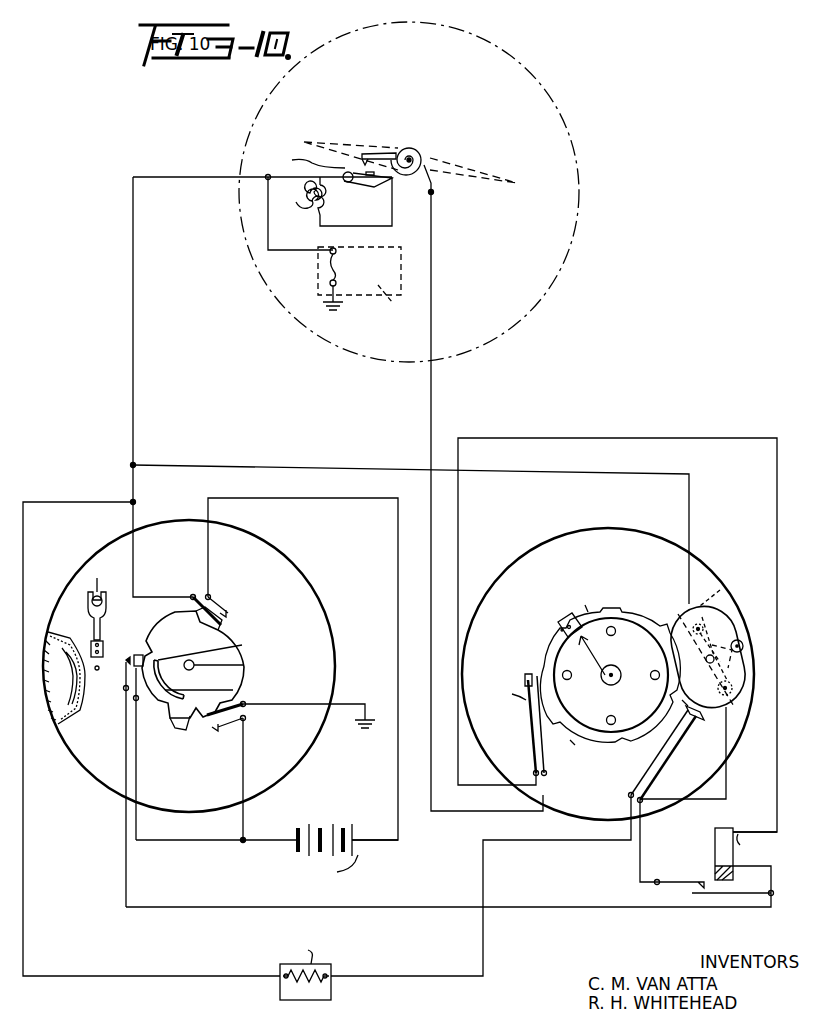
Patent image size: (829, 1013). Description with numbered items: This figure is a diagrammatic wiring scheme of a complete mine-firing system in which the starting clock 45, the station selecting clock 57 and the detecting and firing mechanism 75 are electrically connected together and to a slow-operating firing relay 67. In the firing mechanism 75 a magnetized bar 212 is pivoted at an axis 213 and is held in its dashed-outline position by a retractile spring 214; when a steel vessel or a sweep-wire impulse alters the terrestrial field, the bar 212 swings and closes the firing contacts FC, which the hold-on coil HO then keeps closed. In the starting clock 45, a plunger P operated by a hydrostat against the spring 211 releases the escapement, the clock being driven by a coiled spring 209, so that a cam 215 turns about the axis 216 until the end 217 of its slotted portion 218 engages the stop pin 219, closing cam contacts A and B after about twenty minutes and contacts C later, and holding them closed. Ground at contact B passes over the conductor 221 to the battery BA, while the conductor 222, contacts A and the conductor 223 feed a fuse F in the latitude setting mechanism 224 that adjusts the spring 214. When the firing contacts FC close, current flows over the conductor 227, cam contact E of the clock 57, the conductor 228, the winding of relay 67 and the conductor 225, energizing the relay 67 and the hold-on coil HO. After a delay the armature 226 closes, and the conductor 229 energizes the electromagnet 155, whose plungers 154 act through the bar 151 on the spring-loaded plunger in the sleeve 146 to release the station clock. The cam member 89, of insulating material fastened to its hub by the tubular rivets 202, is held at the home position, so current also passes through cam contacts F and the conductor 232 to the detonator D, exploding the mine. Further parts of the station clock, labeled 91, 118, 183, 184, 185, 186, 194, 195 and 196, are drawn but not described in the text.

The detecting and firing mechanism 75 is at (578, 158).
The pivot axis 213 is at (412, 150).
The retractile spring 214 is at (428, 168).
The magnetized needle or bar 212 is at (470, 163).
The conductor 223 is at (133, 248).
The latitude setting mechanism 224 is at (359, 284).
The conductor 227 is at (431, 386).
The conductor 228 is at (612, 438).
The conductor 222 is at (398, 510).
The starting clock 45 is at (312, 575).
The station selecting clock 57 is at (546, 545).
The spring 211 is at (90, 610).
The coiled spring 209 is at (85, 706).
The stop pin 219 is at (243, 628).
The cam 215 is at (228, 651).
The axis 216 is at (244, 665).
The end of slotted portion 217 is at (225, 697).
The slotted portion 218 is at (178, 727).
The conductor 221 is at (262, 850).
The conductor 225 is at (378, 907).
The conductor 232 is at (483, 860).
The conductor 229 is at (640, 872).
The armature 226 is at (720, 893).
The firing relay 67 is at (720, 830).
The indicator arm 91 is at (592, 612).
The cam follower 183 is at (598, 762).
The cam member 89 is at (634, 610).
The bar 151 is at (690, 620).
The electromagnet 155 is at (722, 590).
The plungers 154 is at (700, 618).
The sleeve 146 is at (740, 658).
The contact block 194 is at (558, 624).
The disc 118 is at (611, 675).
The tubular rivets 202 is at (652, 679).
The contact blade 186 is at (530, 716).
The contact blade 185 is at (540, 728).
The insulating block 184 is at (690, 706).
The contact blade 196 is at (674, 746).
The contact blade 195 is at (658, 768).